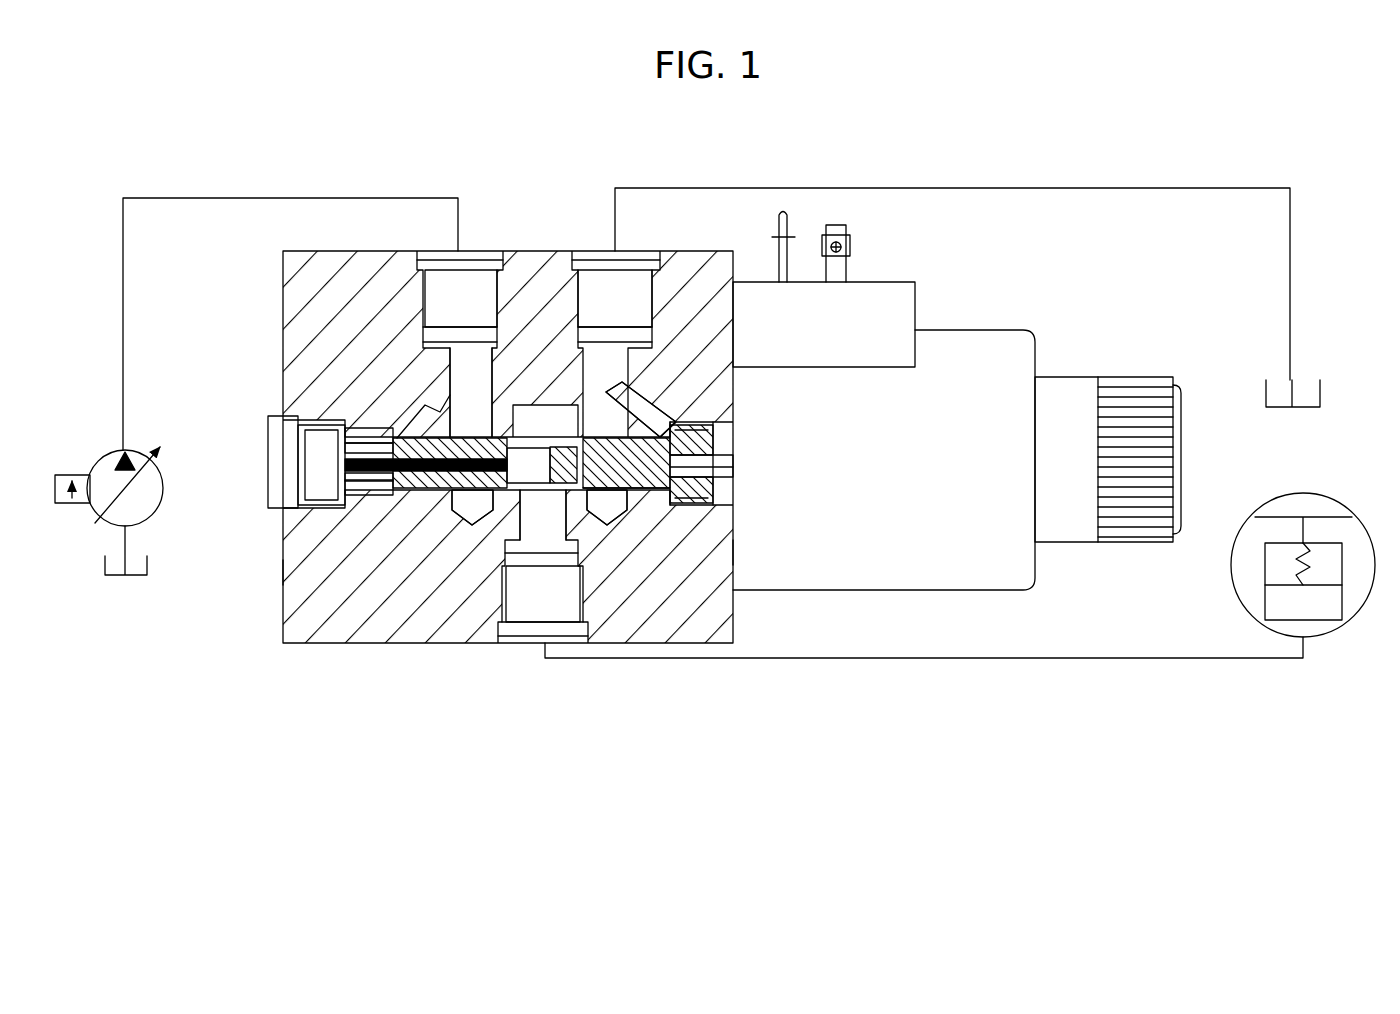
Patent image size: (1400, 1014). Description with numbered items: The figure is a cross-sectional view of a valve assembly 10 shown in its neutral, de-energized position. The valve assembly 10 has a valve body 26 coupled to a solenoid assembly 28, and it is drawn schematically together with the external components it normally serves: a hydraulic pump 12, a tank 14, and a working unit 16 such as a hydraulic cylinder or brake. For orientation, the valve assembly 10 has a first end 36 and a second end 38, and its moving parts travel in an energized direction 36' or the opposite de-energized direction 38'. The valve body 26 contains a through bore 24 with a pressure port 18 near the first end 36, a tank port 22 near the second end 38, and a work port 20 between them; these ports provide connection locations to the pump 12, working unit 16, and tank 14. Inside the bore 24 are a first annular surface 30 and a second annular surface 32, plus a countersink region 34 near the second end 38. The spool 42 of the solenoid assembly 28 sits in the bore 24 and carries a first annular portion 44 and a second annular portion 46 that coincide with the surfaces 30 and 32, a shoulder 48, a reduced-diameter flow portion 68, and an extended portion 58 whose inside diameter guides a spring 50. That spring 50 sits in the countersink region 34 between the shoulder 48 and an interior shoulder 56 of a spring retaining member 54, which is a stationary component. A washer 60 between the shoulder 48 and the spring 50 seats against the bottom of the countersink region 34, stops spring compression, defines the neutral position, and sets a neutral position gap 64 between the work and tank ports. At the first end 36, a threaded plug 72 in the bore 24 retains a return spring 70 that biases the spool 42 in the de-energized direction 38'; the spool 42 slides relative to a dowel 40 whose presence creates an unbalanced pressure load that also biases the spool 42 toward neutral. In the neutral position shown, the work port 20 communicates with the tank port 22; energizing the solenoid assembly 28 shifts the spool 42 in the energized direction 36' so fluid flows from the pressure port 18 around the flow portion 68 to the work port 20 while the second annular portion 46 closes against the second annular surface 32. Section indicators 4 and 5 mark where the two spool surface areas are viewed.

The valve assembly 10 is at (375, 673).
The hydraulic pump 12 is at (110, 583).
The tank 14 is at (1312, 360).
The working unit 16 is at (1345, 642).
The pressure port 18 is at (440, 251).
The work port 20 is at (513, 630).
The tank port 22 is at (638, 251).
The bore 24 is at (410, 437).
The valve body 26 is at (315, 297).
The solenoid assembly 28 is at (997, 580).
The first annular surface 30 is at (471, 394).
The second annular surface 32 is at (556, 437).
The countersink region 34 is at (668, 418).
The first end 36 is at (250, 575).
The second end 38 is at (760, 555).
The energized direction 36' is at (416, 148).
The de-energized direction 38' is at (663, 148).
The dowel 40 is at (350, 443).
The spool 42 is at (410, 492).
The first annular portion 44 is at (470, 504).
The second annular portion 46 is at (625, 506).
The shoulder 48 is at (626, 509).
The spring 50 is at (690, 437).
The spring retaining member 54 is at (733, 492).
The interior shoulder 56 is at (733, 429).
The extended portion 58 is at (733, 463).
The washer 60 is at (668, 502).
The neutral position gap 64 is at (626, 440).
The flow portion 68 is at (543, 515).
The return spring 70 is at (356, 490).
The plug 72 is at (287, 498).
The section line 4- 4 is at (507, 398).
The section line 5- 5 is at (573, 375).